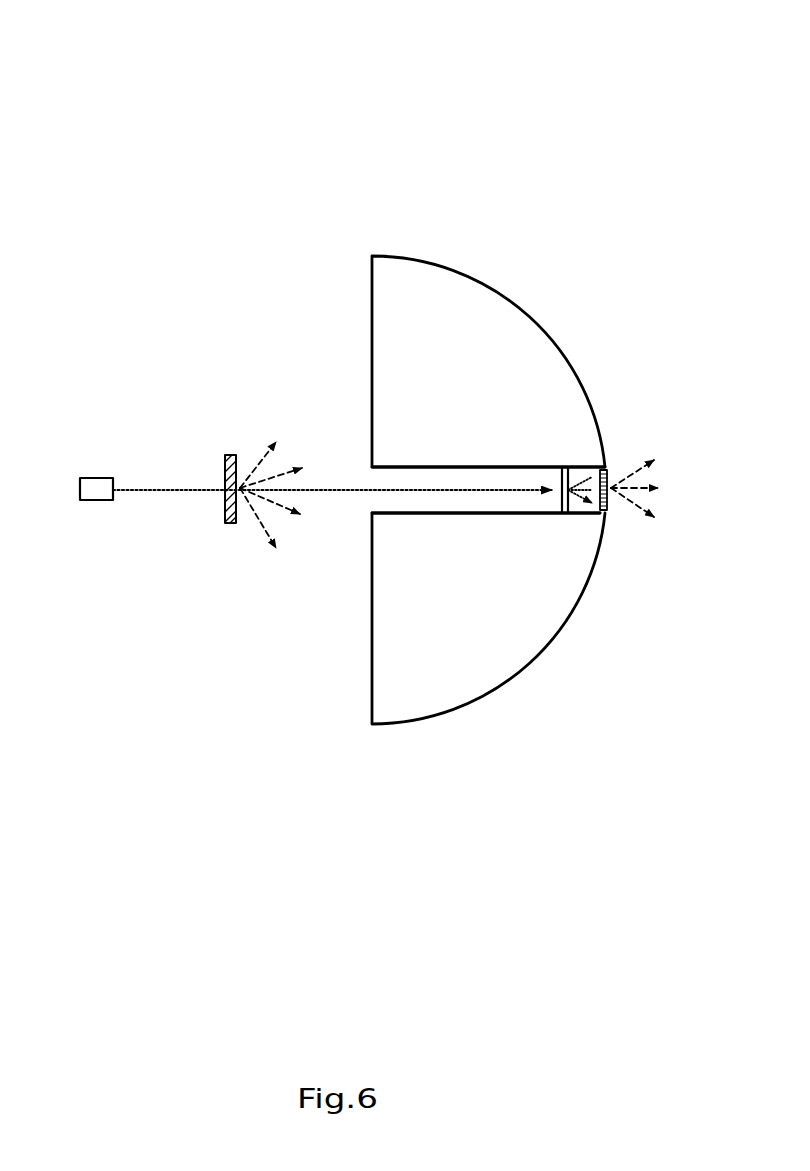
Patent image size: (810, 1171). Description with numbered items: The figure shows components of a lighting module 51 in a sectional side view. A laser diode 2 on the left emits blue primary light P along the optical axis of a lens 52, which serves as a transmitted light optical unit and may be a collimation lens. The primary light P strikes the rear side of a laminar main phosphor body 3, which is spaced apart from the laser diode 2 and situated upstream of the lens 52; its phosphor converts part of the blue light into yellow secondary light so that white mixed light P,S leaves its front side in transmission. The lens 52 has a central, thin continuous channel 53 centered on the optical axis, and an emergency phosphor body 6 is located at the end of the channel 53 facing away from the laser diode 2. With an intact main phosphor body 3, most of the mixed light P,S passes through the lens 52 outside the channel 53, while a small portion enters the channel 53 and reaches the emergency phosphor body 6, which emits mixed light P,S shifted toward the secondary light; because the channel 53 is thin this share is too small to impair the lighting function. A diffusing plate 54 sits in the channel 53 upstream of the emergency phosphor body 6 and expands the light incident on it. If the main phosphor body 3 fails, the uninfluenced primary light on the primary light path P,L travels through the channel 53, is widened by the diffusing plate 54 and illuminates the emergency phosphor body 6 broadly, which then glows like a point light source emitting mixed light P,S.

The lighting module 51 is at (122, 180).
The lens 52 is at (555, 338).
The channel 53 is at (502, 467).
The diffusing plate 54 is at (567, 467).
The emergency phosphor body 6 is at (608, 506).
The laser diode 2 is at (100, 478).
The main phosphor body 3 is at (225, 507).
The primary light P is at (178, 488).
The primary light on primary light path P,L is at (327, 492).
The mixed light P,S is at (305, 465).